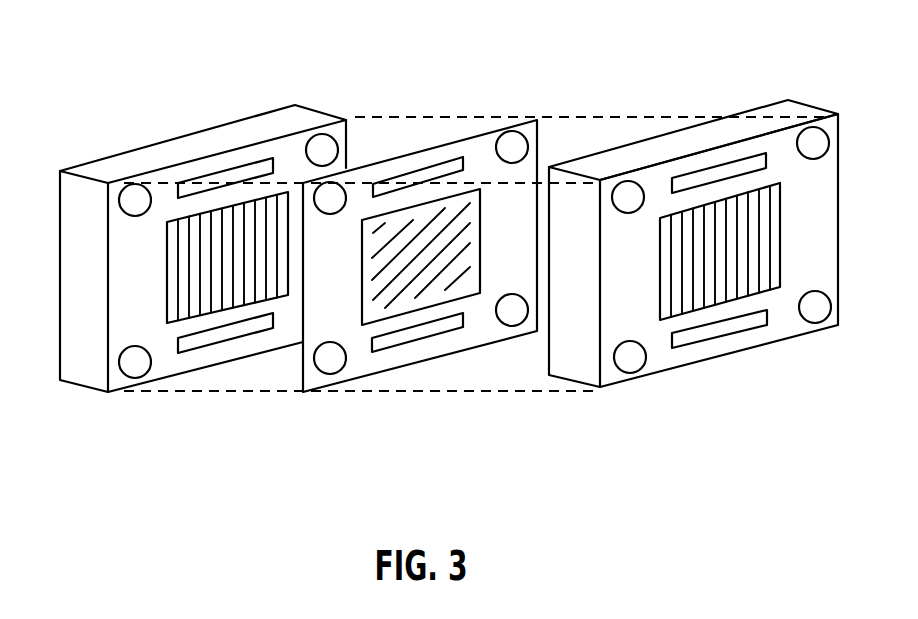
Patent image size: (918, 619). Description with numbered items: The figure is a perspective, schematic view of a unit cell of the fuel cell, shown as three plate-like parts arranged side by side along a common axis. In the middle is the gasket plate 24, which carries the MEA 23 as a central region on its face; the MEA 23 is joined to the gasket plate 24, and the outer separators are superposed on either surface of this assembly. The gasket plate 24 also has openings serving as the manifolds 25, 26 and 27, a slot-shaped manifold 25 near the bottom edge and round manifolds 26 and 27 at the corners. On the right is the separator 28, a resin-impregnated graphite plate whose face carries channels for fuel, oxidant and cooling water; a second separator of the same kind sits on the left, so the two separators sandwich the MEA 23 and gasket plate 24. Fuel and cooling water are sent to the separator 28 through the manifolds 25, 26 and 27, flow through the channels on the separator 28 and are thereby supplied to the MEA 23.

The MEA 23 is at (427, 198).
The gasket plate 24 is at (485, 163).
The manifold 25 is at (425, 335).
The manifold 26 is at (333, 367).
The manifold 27 is at (517, 317).
The separator 28 is at (705, 135).